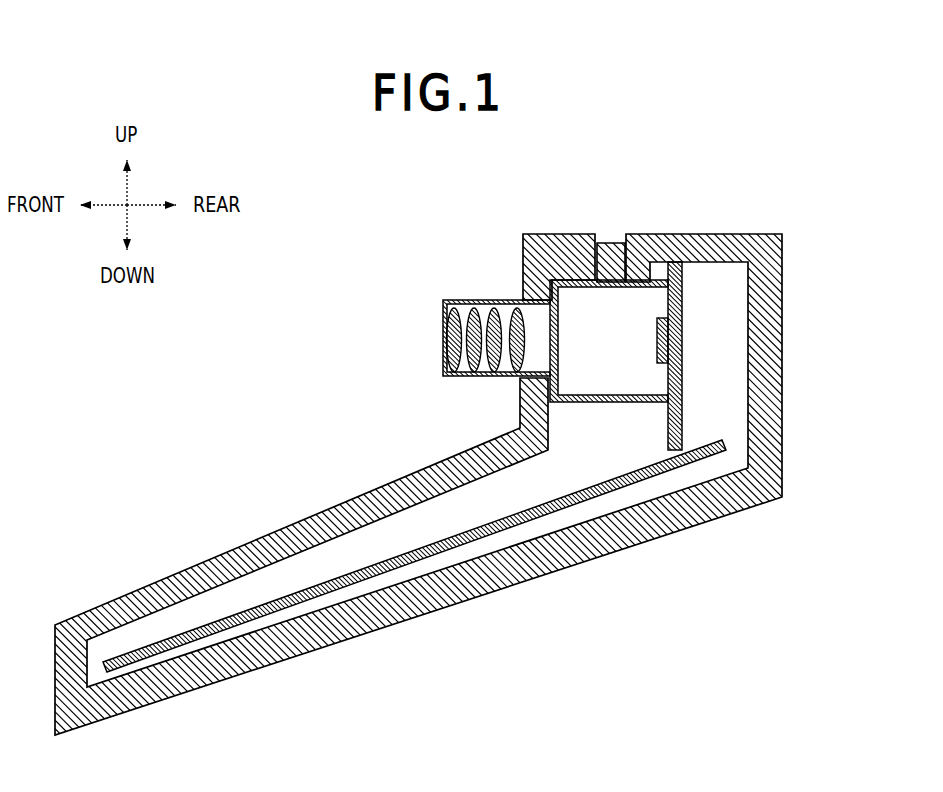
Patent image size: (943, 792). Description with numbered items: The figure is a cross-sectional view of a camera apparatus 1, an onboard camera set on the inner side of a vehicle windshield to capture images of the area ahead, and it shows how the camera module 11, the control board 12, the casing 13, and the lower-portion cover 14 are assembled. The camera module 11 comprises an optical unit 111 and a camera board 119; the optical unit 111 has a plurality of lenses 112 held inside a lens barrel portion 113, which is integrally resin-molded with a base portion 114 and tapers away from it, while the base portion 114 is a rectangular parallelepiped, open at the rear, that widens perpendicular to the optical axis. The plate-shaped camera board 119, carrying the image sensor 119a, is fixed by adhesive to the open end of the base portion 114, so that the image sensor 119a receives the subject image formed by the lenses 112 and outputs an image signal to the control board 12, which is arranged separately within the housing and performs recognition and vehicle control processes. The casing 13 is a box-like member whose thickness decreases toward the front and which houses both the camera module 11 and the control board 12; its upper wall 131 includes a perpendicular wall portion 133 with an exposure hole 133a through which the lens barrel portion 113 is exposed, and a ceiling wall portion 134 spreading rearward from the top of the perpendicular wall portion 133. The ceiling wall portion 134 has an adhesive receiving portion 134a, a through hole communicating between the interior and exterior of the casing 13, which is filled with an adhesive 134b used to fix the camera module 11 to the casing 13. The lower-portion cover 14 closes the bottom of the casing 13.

The camera apparatus 1 is at (460, 437).
The camera module 11 is at (608, 308).
The optical unit 111 is at (451, 287).
The lenses 112 is at (482, 316).
The lens barrel portion 113 is at (451, 369).
The base portion 114 is at (483, 418).
The camera board 119 is at (746, 311).
The image sensor 119a is at (761, 340).
The control board 12 is at (464, 556).
The casing 13 is at (418, 437).
The upper wall 131 is at (301, 534).
The perpendicular wall portion 133 is at (470, 420).
The exposure hole 133a is at (439, 397).
The ceiling wall portion 134 is at (704, 318).
The adhesive receiving portion 134a is at (580, 216).
The adhesive 134b is at (643, 212).
The lower-portion cover 14 is at (418, 601).